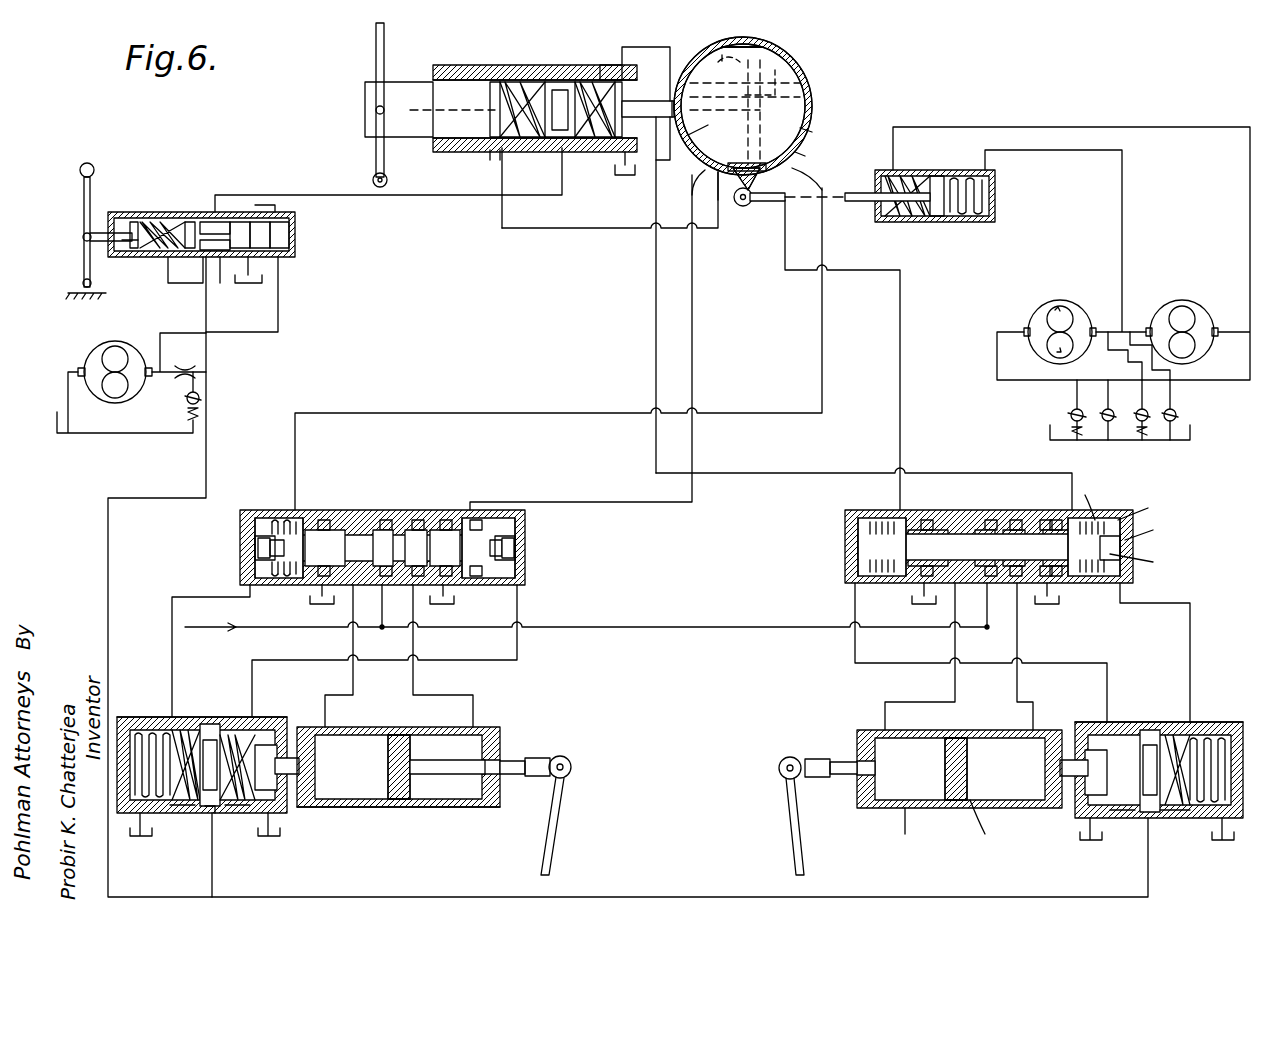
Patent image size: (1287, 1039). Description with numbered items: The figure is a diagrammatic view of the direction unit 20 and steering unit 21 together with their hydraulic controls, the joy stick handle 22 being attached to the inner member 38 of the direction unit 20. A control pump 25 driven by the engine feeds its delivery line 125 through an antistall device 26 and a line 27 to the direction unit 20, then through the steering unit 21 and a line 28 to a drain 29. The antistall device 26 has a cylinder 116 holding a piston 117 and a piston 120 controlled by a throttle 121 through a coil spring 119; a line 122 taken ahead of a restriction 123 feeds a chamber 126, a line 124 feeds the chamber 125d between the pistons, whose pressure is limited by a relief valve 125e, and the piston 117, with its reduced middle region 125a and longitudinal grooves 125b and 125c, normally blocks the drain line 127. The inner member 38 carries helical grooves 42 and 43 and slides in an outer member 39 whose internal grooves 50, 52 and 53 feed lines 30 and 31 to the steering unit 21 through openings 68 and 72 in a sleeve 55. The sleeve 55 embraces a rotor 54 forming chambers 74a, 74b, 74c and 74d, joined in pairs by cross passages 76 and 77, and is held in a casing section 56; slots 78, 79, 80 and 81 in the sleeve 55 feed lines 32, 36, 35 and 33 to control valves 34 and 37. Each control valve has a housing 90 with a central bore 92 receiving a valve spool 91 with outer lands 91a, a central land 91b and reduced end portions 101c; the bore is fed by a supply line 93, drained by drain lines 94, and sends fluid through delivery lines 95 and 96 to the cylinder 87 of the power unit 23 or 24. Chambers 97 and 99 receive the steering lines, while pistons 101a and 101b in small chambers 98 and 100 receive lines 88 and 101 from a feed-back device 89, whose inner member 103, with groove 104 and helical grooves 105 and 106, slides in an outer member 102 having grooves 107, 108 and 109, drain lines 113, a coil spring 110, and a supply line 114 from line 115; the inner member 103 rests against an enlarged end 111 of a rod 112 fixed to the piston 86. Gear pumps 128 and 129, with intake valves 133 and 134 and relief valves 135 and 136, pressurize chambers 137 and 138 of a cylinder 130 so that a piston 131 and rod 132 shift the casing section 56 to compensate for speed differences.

The direction unit 20 is at (479, 55).
The steering unit 21 is at (622, 52).
The control lever 22 is at (372, 40).
The power unit 23 is at (513, 723).
The power unit 24 is at (850, 725).
The control pump 25 is at (96, 350).
The antistall device 26 is at (309, 252).
The line 27 is at (437, 196).
The line 28 is at (658, 170).
The drain 29 is at (628, 178).
The hydraulic line 30 is at (550, 229).
The hydraulic line 31 is at (672, 60).
The hydraulic line 32 is at (655, 344).
The hydraulic line 33 is at (901, 318).
The control valve 34 is at (1098, 510).
The hydraulic line 35 is at (822, 337).
The hydraulic line 36 is at (693, 334).
The control valve 37 is at (449, 494).
The inner member 38 is at (408, 80).
The outer member 39 is at (487, 80).
The helical groove 42 is at (515, 80).
The helical groove 43 is at (595, 80).
The narrow groove 50 is at (553, 152).
The annular internal peripheral groove 52 is at (495, 150).
The annular internal peripheral groove 53 is at (630, 66).
The inner member or rotor 54 is at (790, 102).
The sleeve 55 is at (810, 136).
The casing section 56 is at (748, 200).
The opening 68 is at (738, 178).
The opening 72 is at (648, 102).
The chamber 74a is at (695, 168).
The chamber 74b is at (760, 205).
The chamber 74c is at (800, 114).
The chamber 74d is at (770, 52).
The cross passage 76 is at (740, 34).
The cross passage 77 is at (805, 62).
The longitudinal slot 78 is at (680, 160).
The longitudinal slot 79 is at (718, 180).
The longitudinal slot 80 is at (782, 172).
The longitudinal slot 81 is at (805, 148).
The piston 86 is at (412, 800).
The cylinder 87 is at (365, 808).
The line 88 is at (517, 651).
The feed-back device 89 is at (269, 707).
The housing 90 is at (343, 520).
The valve spool 91 is at (316, 520).
The outer land 91a is at (326, 515).
The central land 91b is at (384, 515).
The central bore 92 is at (402, 520).
The supply line 93 is at (382, 603).
The drain line 94 is at (312, 596).
The delivery line 95 is at (414, 610).
The delivery line 96 is at (353, 644).
The chamber 97 is at (490, 520).
The chamber 98 is at (526, 540).
The chamber 99 is at (298, 520).
The chamber 100 is at (262, 545).
The line 101 is at (195, 597).
The piston 101a is at (505, 518).
The piston 101b is at (258, 552).
The reduced end portion 101c is at (280, 545).
The outer member 102 is at (148, 717).
The inner member 103 is at (237, 730).
The annular peripheral groove 104 is at (212, 725).
The helical groove 105 is at (232, 813).
The helical groove 106 is at (185, 813).
The internal annular peripheral groove 107 is at (208, 830).
The internal annular peripheral groove 108 is at (272, 738).
The internal annular peripheral groove 109 is at (180, 730).
The coil spring 110 is at (140, 717).
The enlarged end 111 is at (288, 745).
The rod 112 is at (372, 765).
The drain line 113 is at (140, 835).
The supply line 114 is at (212, 874).
The supply line 115 is at (108, 604).
The cylinder 116 is at (155, 218).
The piston 117 is at (262, 218).
The coil spring 119 is at (150, 220).
The piston 120 is at (138, 250).
The throttle 121 is at (70, 176).
The line 122 is at (280, 302).
The restriction 123 is at (190, 365).
The line 124 is at (170, 292).
The delivery line 125 is at (206, 316).
The reduced middle region 125a is at (220, 257).
The longitudinal groove 125b is at (242, 218).
The longitudinal groove 125c is at (200, 215).
The chamber 125d is at (175, 218).
The relief valve 125e is at (200, 398).
The chamber 126 is at (283, 218).
The drain line 127 is at (255, 262).
The gear pump 128 is at (1202, 312).
The gear pump 129 is at (1095, 298).
The cylinder 130 is at (975, 222).
The piston 131 is at (936, 222).
The rod 132 is at (860, 205).
The intake valve 133 is at (1108, 425).
The intake valve 134 is at (1180, 406).
The pressure relief valve 135 is at (1150, 428).
The pressure relief valve 136 is at (1070, 412).
The chamber 137 is at (930, 170).
The chamber 138 is at (995, 186).